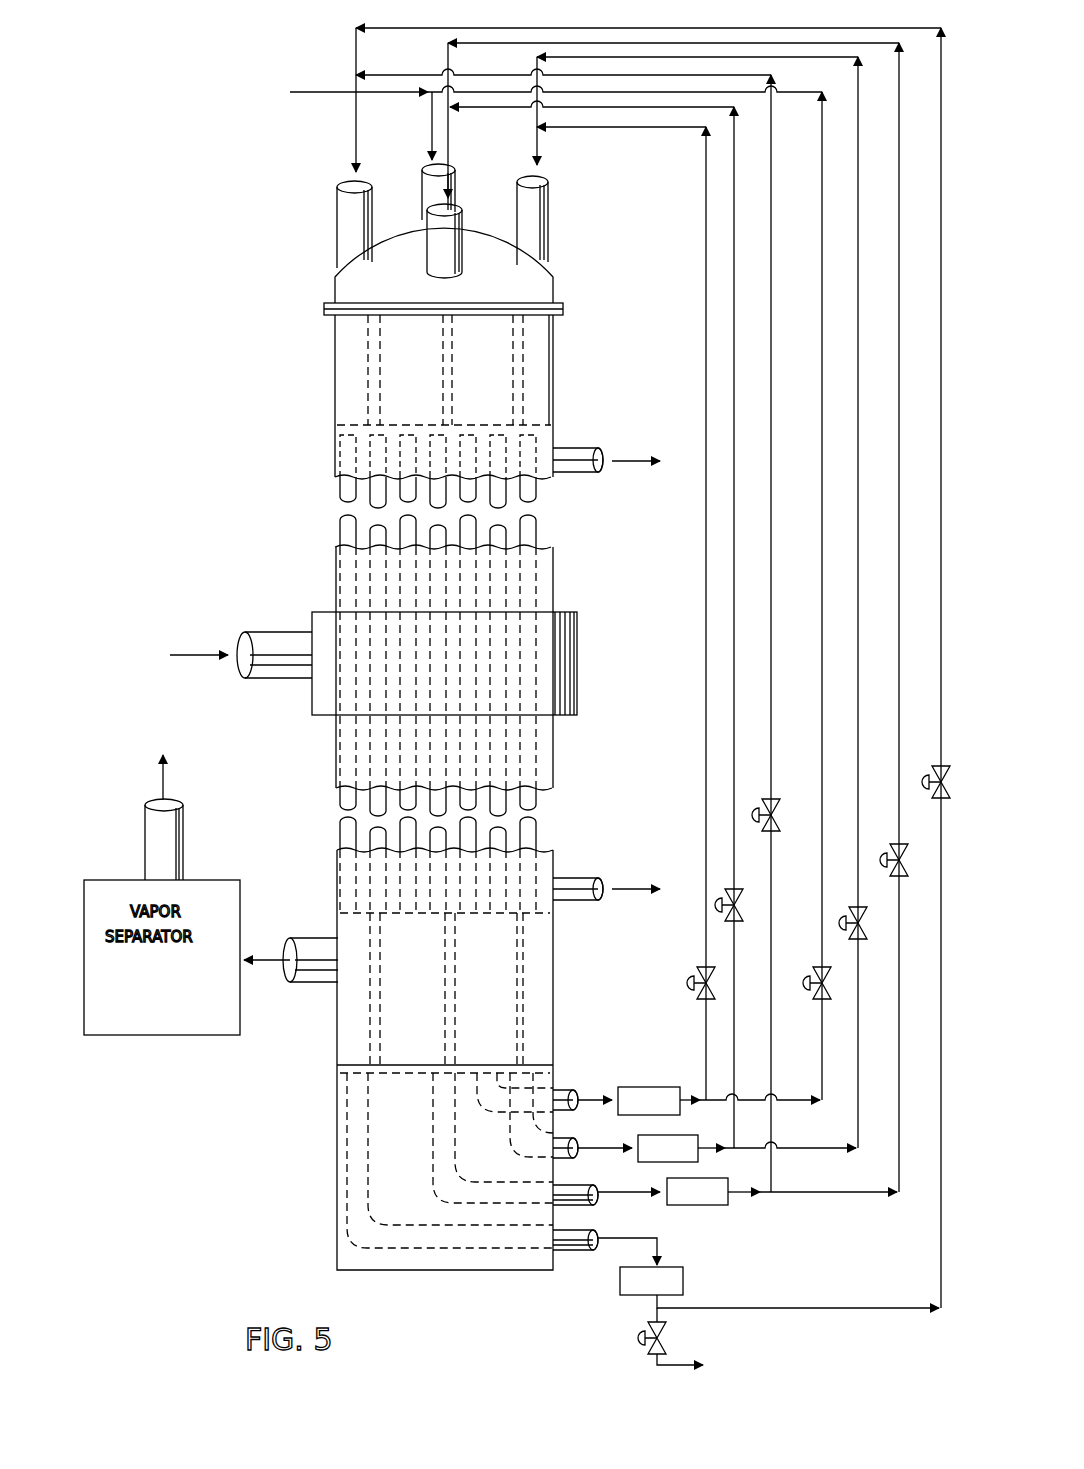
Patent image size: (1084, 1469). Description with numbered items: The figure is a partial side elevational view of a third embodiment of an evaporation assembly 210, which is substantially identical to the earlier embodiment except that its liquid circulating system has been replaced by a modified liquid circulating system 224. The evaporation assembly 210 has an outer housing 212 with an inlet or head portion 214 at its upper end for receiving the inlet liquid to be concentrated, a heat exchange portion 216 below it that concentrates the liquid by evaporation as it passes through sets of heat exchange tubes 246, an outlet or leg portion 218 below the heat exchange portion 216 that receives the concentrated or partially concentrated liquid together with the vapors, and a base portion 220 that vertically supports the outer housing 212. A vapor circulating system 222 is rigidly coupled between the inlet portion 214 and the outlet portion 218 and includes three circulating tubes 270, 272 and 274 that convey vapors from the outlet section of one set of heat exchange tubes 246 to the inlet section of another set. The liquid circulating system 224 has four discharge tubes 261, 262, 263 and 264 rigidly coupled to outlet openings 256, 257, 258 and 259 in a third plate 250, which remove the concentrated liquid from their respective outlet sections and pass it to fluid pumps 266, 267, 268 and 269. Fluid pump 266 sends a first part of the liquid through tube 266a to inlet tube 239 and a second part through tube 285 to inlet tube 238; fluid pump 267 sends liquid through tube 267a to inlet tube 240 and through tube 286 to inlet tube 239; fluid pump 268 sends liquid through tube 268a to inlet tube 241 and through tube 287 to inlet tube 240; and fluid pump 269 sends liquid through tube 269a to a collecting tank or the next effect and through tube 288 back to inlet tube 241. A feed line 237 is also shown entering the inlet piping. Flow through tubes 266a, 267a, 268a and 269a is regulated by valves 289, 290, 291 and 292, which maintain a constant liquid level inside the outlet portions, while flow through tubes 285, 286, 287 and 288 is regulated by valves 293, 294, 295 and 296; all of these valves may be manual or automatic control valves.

The evaporation assembly 210 is at (257, 246).
The outer housing 212 is at (328, 335).
The inlet or head portion 214 is at (564, 293).
The heat exchange portion 216 is at (558, 572).
The outlet or leg portion 218 is at (558, 972).
The base portion 220 is at (573, 1270).
The vapor circulating system 222 is at (555, 507).
The liquid circulating system 224 is at (808, 1236).
The feed line 237 is at (315, 92).
The inlet tube 238 is at (422, 190).
The inlet tube 239 is at (515, 207).
The inlet tube 240 is at (462, 245).
The inlet tube 241 is at (337, 212).
The heat exchange tubes 246 is at (332, 490).
The third plate 250 is at (338, 1060).
The outlet opening 256 is at (500, 1067).
The outlet opening 257 is at (500, 1067).
The outlet opening 258 is at (409, 1068).
The outlet opening 259 is at (370, 1068).
The discharge tube 261 is at (568, 1088).
The discharge tube 262 is at (573, 1142).
The discharge tube 263 is at (585, 1186).
The discharge tube 264 is at (591, 1230).
The fluid pump 266 is at (637, 1087).
The tube 266a is at (706, 673).
The fluid pump 267 is at (687, 1133).
The tube 267a is at (734, 695).
The fluid pump 268 is at (703, 1207).
The tube 268a is at (771, 730).
The fluid pump 269 is at (683, 1277).
The tube 269a is at (666, 1365).
The circulating tube 270 is at (538, 528).
The circulating tube 272 is at (472, 500).
The circulating tube 274 is at (387, 506).
The tube 285 is at (822, 695).
The tube 286 is at (858, 650).
The tube 287 is at (899, 618).
The tube 288 is at (941, 608).
The valve 289 is at (687, 970).
The valve 290 is at (716, 895).
The valve 291 is at (783, 803).
The valve 292 is at (622, 1340).
The valve 293 is at (800, 972).
The valve 294 is at (840, 906).
The valve 295 is at (875, 836).
The valve 296 is at (917, 772).